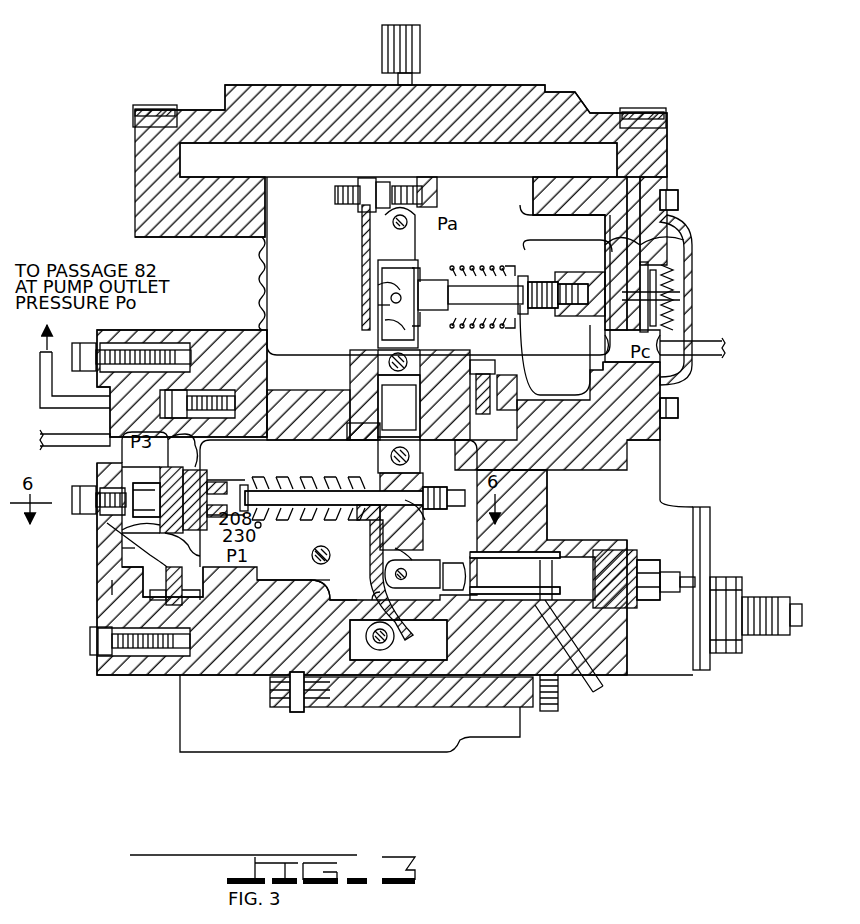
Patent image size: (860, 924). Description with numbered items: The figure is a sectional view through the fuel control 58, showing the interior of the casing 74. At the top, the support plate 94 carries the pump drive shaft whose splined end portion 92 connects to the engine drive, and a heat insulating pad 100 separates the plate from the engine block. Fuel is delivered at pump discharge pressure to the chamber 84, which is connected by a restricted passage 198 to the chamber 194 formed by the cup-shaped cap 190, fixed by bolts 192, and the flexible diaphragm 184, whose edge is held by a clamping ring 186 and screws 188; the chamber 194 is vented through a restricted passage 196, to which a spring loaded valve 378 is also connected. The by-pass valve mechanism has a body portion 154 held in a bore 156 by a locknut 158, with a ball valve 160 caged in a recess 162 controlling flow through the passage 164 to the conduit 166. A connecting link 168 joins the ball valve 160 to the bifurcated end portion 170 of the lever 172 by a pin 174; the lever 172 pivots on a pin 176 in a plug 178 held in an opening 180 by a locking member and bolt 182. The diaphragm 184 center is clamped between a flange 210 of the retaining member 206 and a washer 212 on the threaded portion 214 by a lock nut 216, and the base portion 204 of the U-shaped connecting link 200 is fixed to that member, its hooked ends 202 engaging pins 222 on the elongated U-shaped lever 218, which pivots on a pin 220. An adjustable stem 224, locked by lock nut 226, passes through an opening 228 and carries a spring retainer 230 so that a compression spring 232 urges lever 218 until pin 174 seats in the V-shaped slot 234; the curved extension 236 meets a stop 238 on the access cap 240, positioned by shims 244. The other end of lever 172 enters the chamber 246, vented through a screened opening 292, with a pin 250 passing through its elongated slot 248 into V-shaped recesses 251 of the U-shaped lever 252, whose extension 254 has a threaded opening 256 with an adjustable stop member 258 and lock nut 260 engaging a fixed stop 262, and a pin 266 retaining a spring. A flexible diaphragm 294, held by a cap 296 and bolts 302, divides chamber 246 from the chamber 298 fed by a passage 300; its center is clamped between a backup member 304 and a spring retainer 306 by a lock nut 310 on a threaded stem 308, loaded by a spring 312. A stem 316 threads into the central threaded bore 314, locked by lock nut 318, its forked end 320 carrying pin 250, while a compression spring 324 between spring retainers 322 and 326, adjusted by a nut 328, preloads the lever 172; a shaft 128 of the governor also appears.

The fuel control 58 is at (605, 102).
The casing 74 is at (192, 336).
The chamber 84 is at (290, 460).
The splined end portion 92 is at (420, 48).
The support plate 94 is at (520, 100).
The heat insulating pad 100 is at (150, 105).
The shaft 128 is at (312, 556).
The body portion 154 is at (603, 603).
The bore 156 is at (533, 560).
The locknut 158 is at (665, 568).
The ball valve 160 is at (453, 563).
The recess 162 is at (408, 636).
The passage 164 is at (575, 615).
The conduit 166 is at (598, 702).
The connecting link 168 is at (414, 574).
The bifurcated end portion 170 is at (372, 566).
The lever 172 is at (414, 419).
The pin 174 is at (415, 560).
The pin 176 is at (378, 336).
The plug 178 is at (392, 355).
The opening 180 is at (322, 395).
The locking member and bolt 182 is at (500, 366).
The flexible diaphragm 184 is at (160, 540).
The clamping ring 186 is at (175, 574).
The screws 188 is at (214, 392).
The cup-shaped cap 190 is at (112, 593).
The bolts 192 is at (92, 627).
The chamber 194 is at (118, 548).
The restricted passage 196 is at (68, 438).
The restricted passage 198 is at (263, 590).
The U-shaped connecting link 200 is at (245, 492).
The hooked ends 202 is at (425, 485).
The base portion 204 is at (188, 547).
The retaining member 206 is at (222, 480).
The flange 210 is at (183, 475).
The washer 212 is at (165, 480).
The threaded portion 214 is at (112, 528).
The lock nut 216 is at (98, 472).
The elongated U-shaped lever 218 is at (345, 560).
The pin 220 is at (410, 458).
The pin 222 is at (420, 520).
The adjustable stem 224 is at (261, 527).
The lock nut 226 is at (434, 498).
The opening 228 is at (372, 445).
The spring retainer 230 is at (217, 499).
The compression spring 232 is at (270, 483).
The V-shaped slot 234 is at (382, 597).
The curved extension 236 is at (408, 655).
The stop 238 is at (370, 652).
The access cap 240 is at (500, 710).
The shims 244 is at (275, 690).
The chamber 246 is at (306, 202).
The elongated slot 248 is at (380, 288).
The pin 250 is at (390, 298).
The V-shaped recesses 251 is at (360, 295).
The U-shaped lever 252 is at (412, 255).
The extension 254 is at (345, 182).
The threaded opening 256 is at (362, 223).
The adjustable stop member 258 is at (420, 186).
The lock nut 260 is at (378, 178).
The fixed stop 262 is at (440, 190).
The pin 266 is at (394, 224).
The screened opening 292 is at (258, 267).
The flexible diaphragm 294 is at (600, 238).
The cap 296 is at (690, 375).
The chamber 298 is at (672, 218).
The passage 300 is at (720, 343).
The bolts 302 is at (675, 190).
The backup member 304 is at (602, 258).
The spring retainer 306 is at (668, 242).
The threaded stem 308 is at (655, 298).
The lock nut 310 is at (658, 264).
The spring 312 is at (660, 280).
The central threaded bore 314 is at (592, 283).
The stem 316 is at (548, 316).
The lock nut 318 is at (584, 350).
The forked end 320 is at (438, 280).
The spring retainer 322 is at (422, 326).
The compression spring 324 is at (482, 268).
The spring retainer 326 is at (512, 328).
The nut 328 is at (524, 276).
The spring loaded valve 378 is at (115, 366).